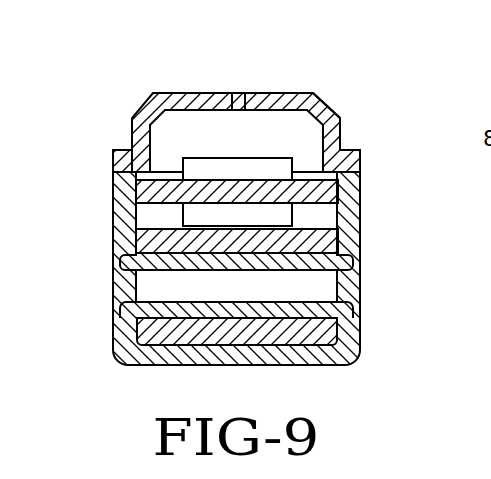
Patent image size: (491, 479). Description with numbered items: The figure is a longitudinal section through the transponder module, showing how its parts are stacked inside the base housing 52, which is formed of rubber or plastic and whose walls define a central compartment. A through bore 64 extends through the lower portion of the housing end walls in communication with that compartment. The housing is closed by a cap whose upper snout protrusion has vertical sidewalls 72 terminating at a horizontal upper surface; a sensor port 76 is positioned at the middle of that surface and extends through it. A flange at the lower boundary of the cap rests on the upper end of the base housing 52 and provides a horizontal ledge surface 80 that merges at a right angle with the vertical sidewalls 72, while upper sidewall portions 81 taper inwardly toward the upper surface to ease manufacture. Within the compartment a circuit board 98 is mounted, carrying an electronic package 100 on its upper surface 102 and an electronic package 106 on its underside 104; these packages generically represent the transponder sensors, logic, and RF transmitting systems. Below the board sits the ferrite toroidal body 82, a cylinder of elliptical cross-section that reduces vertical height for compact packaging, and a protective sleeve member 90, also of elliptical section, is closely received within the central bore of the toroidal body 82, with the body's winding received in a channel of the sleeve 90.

The base housing 52 is at (362, 338).
The through bore 64 is at (112, 293).
The vertical sidewalls 72 is at (340, 137).
The sensor port 76 is at (237, 102).
The horizontal ledge surface 80 is at (123, 148).
The upper sidewall portions 81 is at (330, 103).
The toroidal body 82 is at (172, 333).
The protective sleeve member 90 is at (307, 300).
The circuit board 98 is at (150, 190).
The electronic package 100 is at (213, 164).
The upper surface 102 is at (307, 177).
The underside 104 is at (318, 203).
The electronic package 106 is at (200, 213).